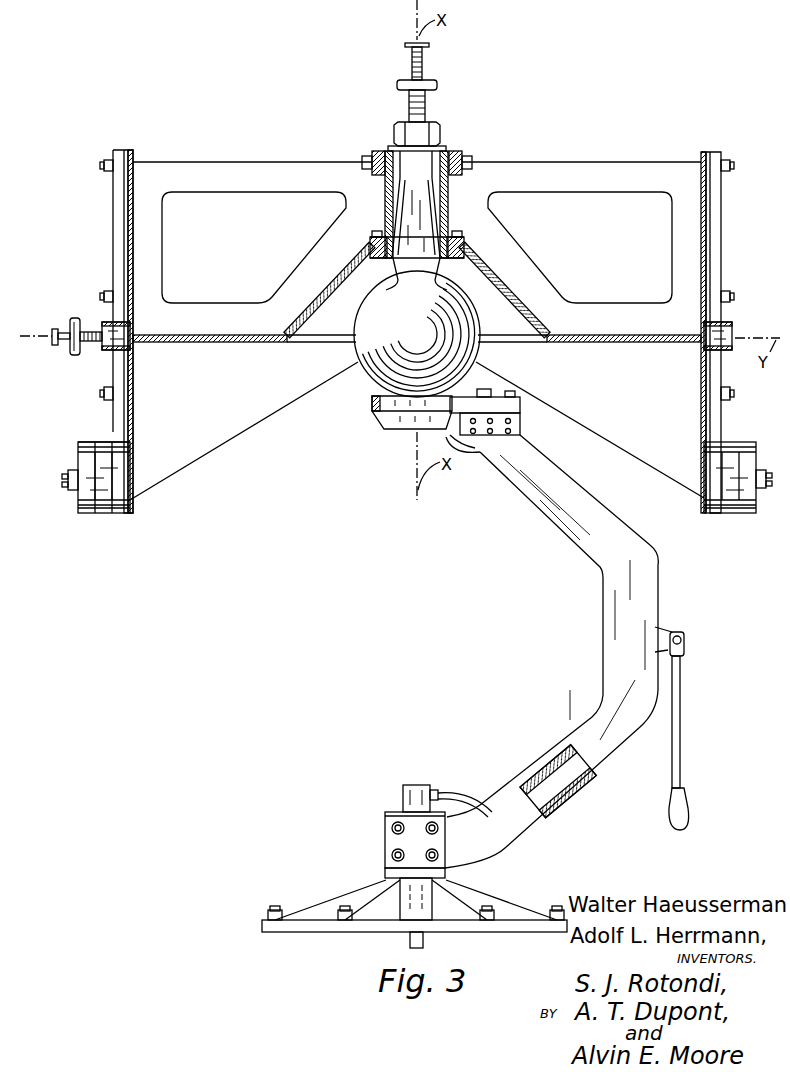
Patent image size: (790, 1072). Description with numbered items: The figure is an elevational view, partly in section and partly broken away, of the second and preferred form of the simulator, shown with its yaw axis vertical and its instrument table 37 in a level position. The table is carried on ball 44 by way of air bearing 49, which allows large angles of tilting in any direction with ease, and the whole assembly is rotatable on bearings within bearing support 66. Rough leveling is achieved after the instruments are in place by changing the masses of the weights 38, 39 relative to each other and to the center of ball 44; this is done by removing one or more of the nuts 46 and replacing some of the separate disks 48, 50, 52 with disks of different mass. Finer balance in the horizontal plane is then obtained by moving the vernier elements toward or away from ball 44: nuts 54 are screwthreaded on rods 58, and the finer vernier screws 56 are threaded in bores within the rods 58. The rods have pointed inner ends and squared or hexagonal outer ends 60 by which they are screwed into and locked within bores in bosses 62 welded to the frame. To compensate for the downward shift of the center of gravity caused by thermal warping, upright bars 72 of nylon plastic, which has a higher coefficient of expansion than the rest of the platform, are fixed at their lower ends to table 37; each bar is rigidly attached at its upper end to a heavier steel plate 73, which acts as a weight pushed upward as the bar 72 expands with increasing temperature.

The instrument table 37 is at (181, 335).
The weight 38 is at (104, 518).
The weight 39 is at (746, 520).
The ball 44 is at (412, 329).
The nut 46 is at (68, 485).
The disk 48 is at (83, 442).
The air bearing 49 is at (375, 392).
The disk 50 is at (105, 442).
The disk 52 is at (123, 458).
The nut 54 is at (75, 318).
The vernier screw 56 is at (61, 346).
The rod 58 is at (87, 343).
The squared or hexagonal outer end 60 is at (66, 332).
The boss 62 is at (108, 322).
The bearing support 66 is at (385, 836).
The bar 72 is at (124, 227).
The steel plate 73 is at (118, 241).